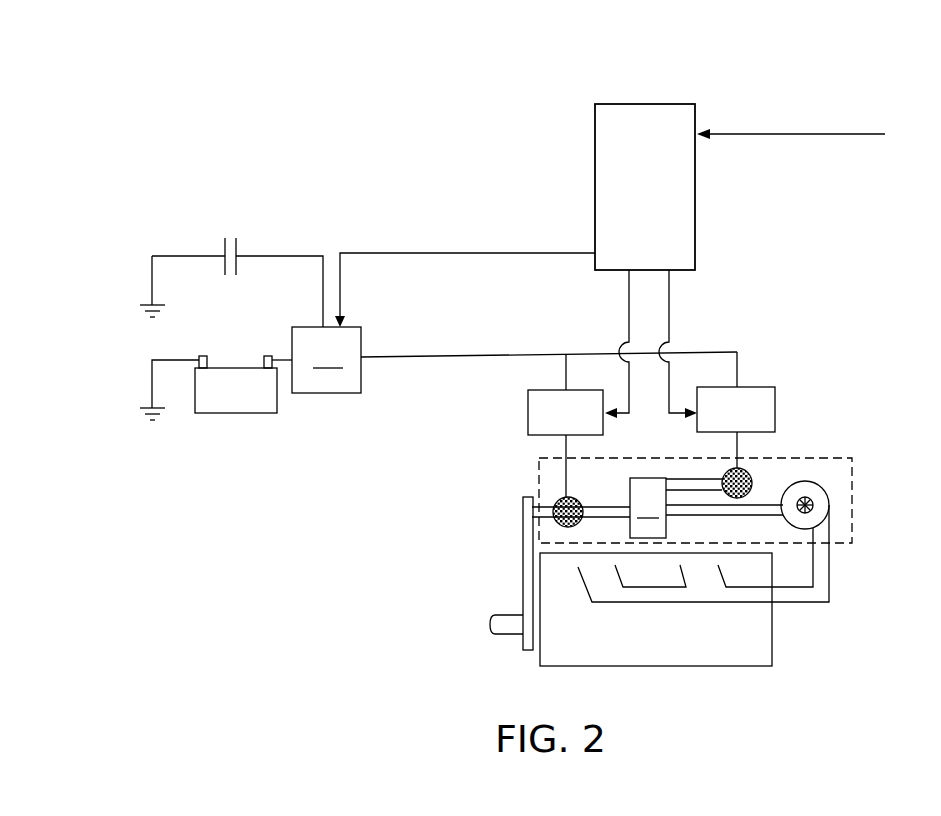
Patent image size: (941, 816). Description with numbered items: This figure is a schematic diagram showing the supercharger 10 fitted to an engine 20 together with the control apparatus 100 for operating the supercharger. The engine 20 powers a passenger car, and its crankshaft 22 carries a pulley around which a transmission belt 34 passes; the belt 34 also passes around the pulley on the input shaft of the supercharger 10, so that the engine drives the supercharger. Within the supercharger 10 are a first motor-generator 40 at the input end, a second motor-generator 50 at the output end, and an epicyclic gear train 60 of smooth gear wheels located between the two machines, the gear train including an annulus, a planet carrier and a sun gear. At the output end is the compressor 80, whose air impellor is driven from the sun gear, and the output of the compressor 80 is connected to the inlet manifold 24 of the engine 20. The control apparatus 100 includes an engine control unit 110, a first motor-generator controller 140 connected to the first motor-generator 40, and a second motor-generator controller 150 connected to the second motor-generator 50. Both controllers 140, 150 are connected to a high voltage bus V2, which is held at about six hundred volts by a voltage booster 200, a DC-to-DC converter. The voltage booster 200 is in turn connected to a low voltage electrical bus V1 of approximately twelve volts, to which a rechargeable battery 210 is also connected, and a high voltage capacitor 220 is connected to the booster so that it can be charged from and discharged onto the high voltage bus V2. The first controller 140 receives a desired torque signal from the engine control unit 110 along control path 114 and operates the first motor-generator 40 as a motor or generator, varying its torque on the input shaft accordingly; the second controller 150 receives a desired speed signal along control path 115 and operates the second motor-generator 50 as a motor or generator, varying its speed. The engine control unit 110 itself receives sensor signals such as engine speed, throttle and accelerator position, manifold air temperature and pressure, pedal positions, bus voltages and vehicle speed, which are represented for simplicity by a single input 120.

The control apparatus 100 is at (516, 196).
The engine control unit (ECU) 110 is at (697, 118).
The input 120 is at (831, 125).
The high voltage capacitor 220 is at (239, 249).
The voltage booster 200 is at (326, 360).
The rechargeable battery 210 is at (233, 414).
The low voltage electrical bus V1 is at (284, 352).
The high voltage bus V2 is at (449, 362).
The control path 114 is at (636, 282).
The control path 115 is at (676, 282).
The first motor-generator controller 140 is at (536, 390).
The second motor-generator controller 150 is at (757, 387).
The supercharger 10 is at (858, 458).
The first motor-generator 40 is at (556, 501).
The second motor-generator 50 is at (752, 482).
The epicyclic gear train 60 is at (648, 508).
The compressor (turbine) 80 is at (830, 506).
The inlet manifold 24 is at (806, 603).
The engine 20 is at (658, 667).
The transmission belt 34 is at (523, 532).
The crankshaft 22 is at (505, 635).